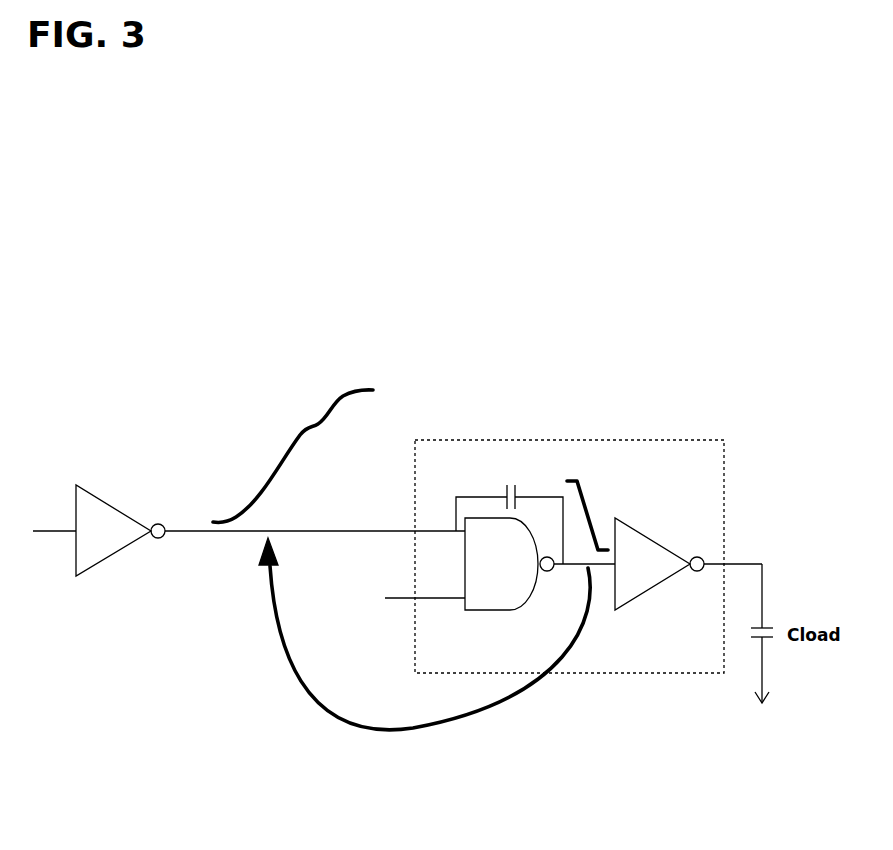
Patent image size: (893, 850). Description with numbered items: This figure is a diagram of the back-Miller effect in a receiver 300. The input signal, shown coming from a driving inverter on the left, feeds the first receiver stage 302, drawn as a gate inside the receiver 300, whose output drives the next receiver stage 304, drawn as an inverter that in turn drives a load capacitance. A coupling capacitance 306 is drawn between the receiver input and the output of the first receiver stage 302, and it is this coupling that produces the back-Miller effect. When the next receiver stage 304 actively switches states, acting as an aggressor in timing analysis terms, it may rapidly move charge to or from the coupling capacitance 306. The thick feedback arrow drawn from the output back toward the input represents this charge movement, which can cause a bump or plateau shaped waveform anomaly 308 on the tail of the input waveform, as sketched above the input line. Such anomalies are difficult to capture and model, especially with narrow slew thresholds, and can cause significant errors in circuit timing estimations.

The receiver 300 is at (570, 440).
The first receiver stage 302 is at (473, 610).
The next receiver stage 304 is at (627, 604).
The coupling capacitance 306 is at (514, 485).
The waveform anomaly 308 is at (318, 425).